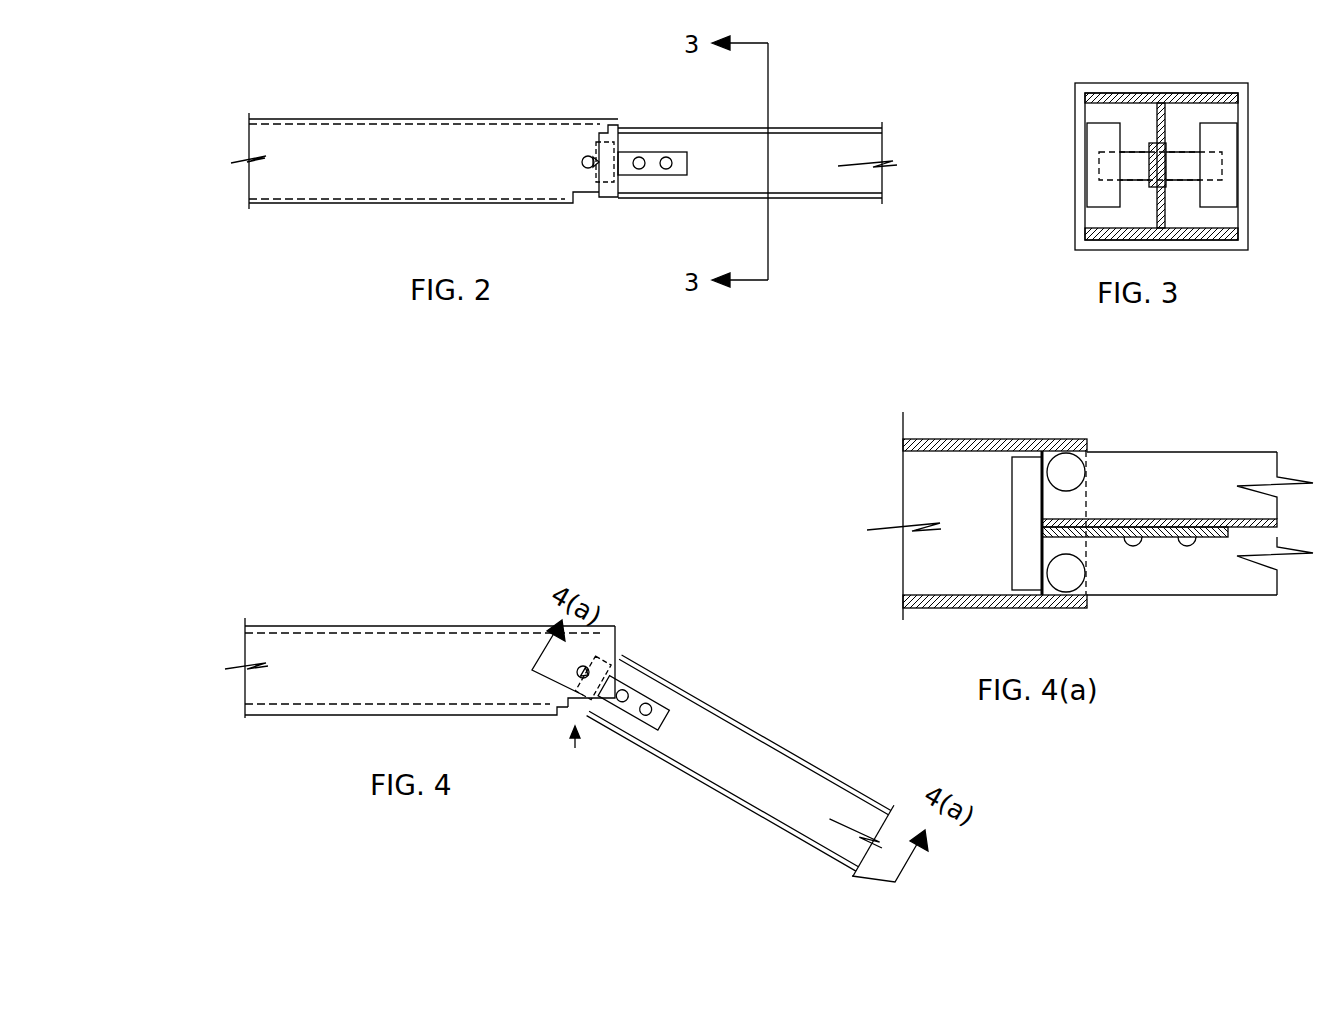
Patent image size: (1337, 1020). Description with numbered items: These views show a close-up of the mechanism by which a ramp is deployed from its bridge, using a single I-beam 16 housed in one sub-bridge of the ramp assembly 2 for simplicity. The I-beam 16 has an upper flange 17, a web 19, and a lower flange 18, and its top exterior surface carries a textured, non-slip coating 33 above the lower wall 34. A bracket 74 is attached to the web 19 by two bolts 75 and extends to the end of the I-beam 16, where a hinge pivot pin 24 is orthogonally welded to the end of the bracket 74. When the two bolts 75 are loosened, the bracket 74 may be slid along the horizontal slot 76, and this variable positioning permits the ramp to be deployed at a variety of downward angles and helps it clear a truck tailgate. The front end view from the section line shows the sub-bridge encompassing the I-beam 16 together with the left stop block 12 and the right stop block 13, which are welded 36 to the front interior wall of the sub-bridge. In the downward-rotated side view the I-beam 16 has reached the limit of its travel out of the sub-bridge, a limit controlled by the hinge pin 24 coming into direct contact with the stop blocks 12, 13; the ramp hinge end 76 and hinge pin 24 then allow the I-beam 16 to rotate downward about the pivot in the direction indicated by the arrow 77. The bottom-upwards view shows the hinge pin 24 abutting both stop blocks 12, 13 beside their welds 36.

In FIG. 4, the pole assembly 2 is at (345, 716).
In FIG. 2, the left stop block 12 is at (618, 178).
In FIG. 3, the left stop block 12 is at (1092, 145).
The left stop block 12 is at (1086, 470).
In FIG. 4, the left stop block 12 is at (615, 668).
The right stop block 13 is at (1087, 575).
In FIG. 2, the I-beam 16 is at (864, 113).
In FIG. 3, the I-beam 16 is at (1161, 166).
The I-beam 16 is at (1160, 452).
In FIG. 2, the upper flange 17 is at (781, 128).
In FIG. 3, the upper flange 17 is at (1202, 90).
The upper flange 17 is at (1160, 595).
In FIG. 3, the lower flange 18 is at (1227, 233).
In FIG. 4, the lower flange 18 is at (245, 706).
In FIG. 2, the web 19 is at (882, 186).
In FIG. 3, the web 19 is at (1165, 203).
The web 19 is at (1210, 520).
In FIG. 4, the web 19 is at (252, 652).
In FIG. 2, the hinge pivot pin 24 is at (585, 163).
In FIG. 3, the hinge pivot pin 24 is at (1167, 152).
The hinge pivot pin 24 is at (1012, 560).
In FIG. 2, the textured, non-slip coating 33 is at (380, 119).
In FIG. 4, the textured, non-slip coating 33 is at (410, 626).
In FIG. 2, the lower wall of pole section 34 is at (318, 204).
In FIG. 3, the weld 36 is at (1240, 165).
The weld 36 is at (1065, 452).
In FIG. 2, the bracket 74 is at (688, 164).
In FIG. 3, the bracket 74 is at (1158, 188).
The bracket 74 is at (1215, 540).
In FIG. 2, the bolts 75 is at (640, 156).
The bolts 75 is at (1135, 545).
In FIG. 2, the horizontal slot 76 is at (604, 135).
In FIG. 4, the horizontal slot 76 is at (568, 712).
In FIG. 4, the pivot direction arrow 77 is at (575, 752).